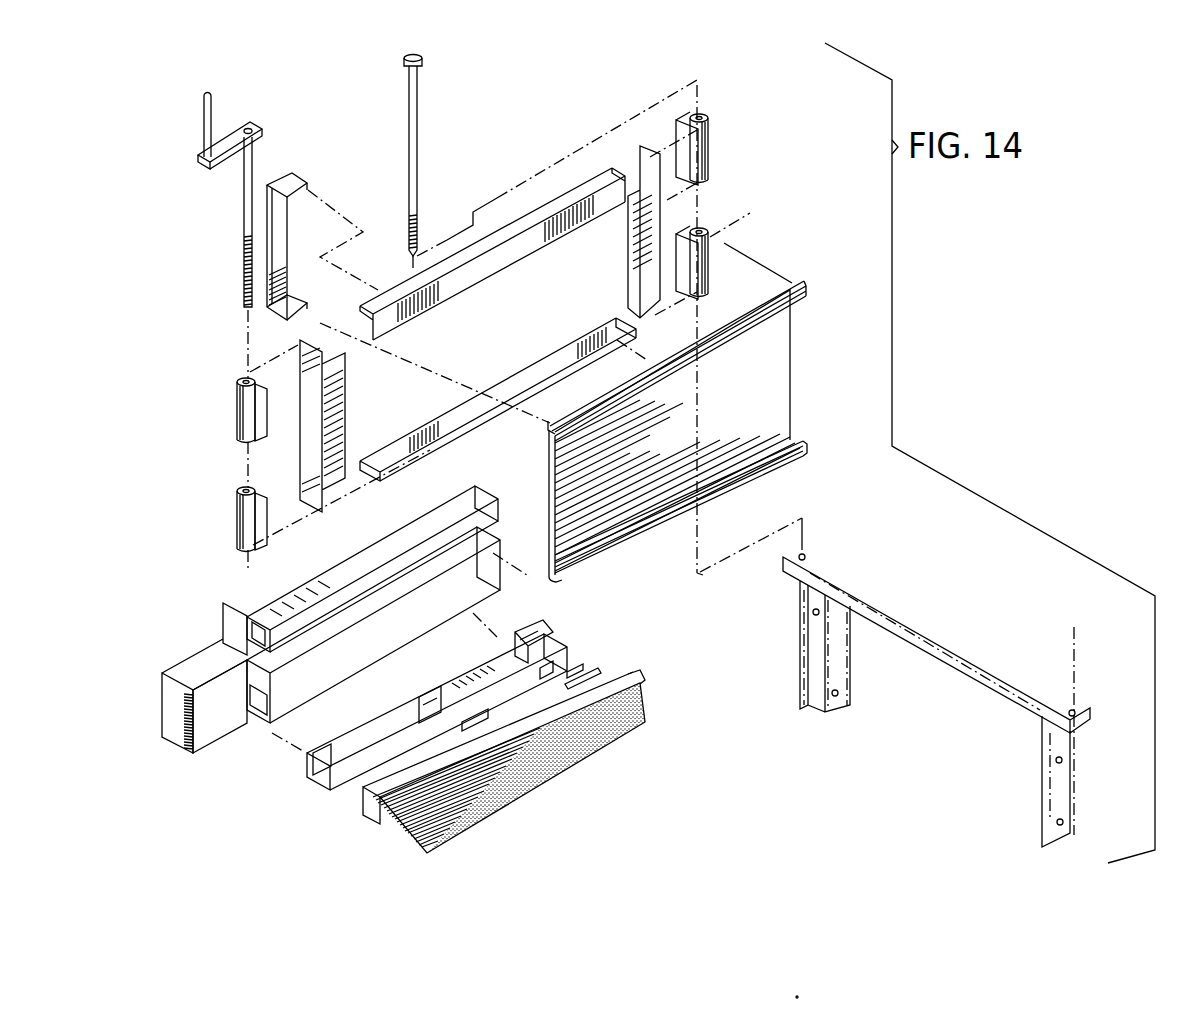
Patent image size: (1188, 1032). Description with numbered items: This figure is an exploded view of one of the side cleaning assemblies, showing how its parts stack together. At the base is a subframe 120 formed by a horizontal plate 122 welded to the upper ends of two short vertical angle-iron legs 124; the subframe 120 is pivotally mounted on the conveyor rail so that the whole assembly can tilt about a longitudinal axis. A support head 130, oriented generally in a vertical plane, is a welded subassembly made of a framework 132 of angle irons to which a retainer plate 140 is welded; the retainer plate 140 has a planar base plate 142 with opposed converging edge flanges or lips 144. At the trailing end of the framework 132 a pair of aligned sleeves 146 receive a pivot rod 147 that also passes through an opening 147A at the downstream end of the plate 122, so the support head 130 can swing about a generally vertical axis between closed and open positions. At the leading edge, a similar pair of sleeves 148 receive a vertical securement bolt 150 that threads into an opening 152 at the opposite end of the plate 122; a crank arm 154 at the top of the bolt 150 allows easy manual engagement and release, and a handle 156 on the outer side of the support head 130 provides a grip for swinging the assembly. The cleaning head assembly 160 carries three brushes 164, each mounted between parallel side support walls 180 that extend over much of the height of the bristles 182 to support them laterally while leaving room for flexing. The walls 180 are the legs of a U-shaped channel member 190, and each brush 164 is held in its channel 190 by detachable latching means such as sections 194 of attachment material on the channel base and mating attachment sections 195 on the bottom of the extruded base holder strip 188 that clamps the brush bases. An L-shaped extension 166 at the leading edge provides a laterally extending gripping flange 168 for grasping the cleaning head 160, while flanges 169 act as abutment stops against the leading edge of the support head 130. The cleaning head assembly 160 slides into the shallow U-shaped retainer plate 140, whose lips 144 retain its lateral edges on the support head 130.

The subframe 120 is at (915, 682).
The horizontal plate 122 is at (918, 616).
The vertical angle-iron legs 124 is at (838, 655).
The support head 130 is at (540, 163).
The framework 132 is at (630, 268).
The retainer plate 140 is at (710, 409).
The planar base plate 142 is at (782, 396).
The converging edge flanges or lips 144 is at (795, 287).
The sleeves 146 is at (710, 128).
The pivot rod 147 is at (420, 114).
The opening 147A is at (808, 556).
The sleeves 148 is at (240, 414).
The securement bolt 150 is at (243, 218).
The opening 152 is at (1080, 710).
The crank arm 154 is at (229, 143).
The handle 156 is at (297, 180).
The cleaning head assembly 160 is at (346, 682).
The brushes 164 is at (513, 768).
The L-shaped extension 166 is at (198, 745).
The gripping flange 168 is at (172, 727).
The flanges 169 is at (227, 622).
The side support walls 180 is at (565, 668).
The bristles 182 is at (408, 847).
The base holder strip 188 is at (636, 693).
The U-shaped channel member 190 is at (247, 643).
The attachment material sections 194 is at (557, 663).
The mating attachment sections 195 is at (548, 666).